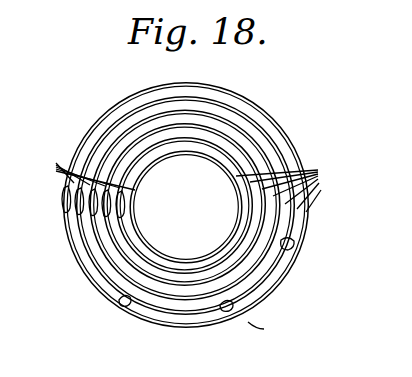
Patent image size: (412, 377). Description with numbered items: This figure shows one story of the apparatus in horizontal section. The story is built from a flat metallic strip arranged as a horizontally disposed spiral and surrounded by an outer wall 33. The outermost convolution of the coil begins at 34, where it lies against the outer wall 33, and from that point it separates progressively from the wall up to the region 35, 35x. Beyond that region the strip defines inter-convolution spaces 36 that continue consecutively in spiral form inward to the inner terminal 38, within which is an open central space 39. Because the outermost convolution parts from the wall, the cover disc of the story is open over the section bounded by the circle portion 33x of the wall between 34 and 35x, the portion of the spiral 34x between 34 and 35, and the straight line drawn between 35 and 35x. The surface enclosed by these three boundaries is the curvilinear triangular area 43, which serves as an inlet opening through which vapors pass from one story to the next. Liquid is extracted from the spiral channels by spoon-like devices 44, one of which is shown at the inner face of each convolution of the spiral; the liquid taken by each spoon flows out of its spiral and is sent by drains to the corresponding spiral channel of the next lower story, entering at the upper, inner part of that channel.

The outer wall 33 is at (100, 126).
The circle portion 33x is at (242, 321).
The beginning of outmost spiral 34 is at (123, 304).
The portion of the spiral 34x is at (225, 313).
The region of separation 35 is at (292, 258).
The region of separation 35x is at (299, 247).
The inter-convolution spaces 36 is at (290, 187).
The inner terminal 38 is at (133, 212).
The open central space 39 is at (189, 195).
The curvilinear triangular area 43 is at (276, 284).
The spoon-like devices 44 is at (81, 188).